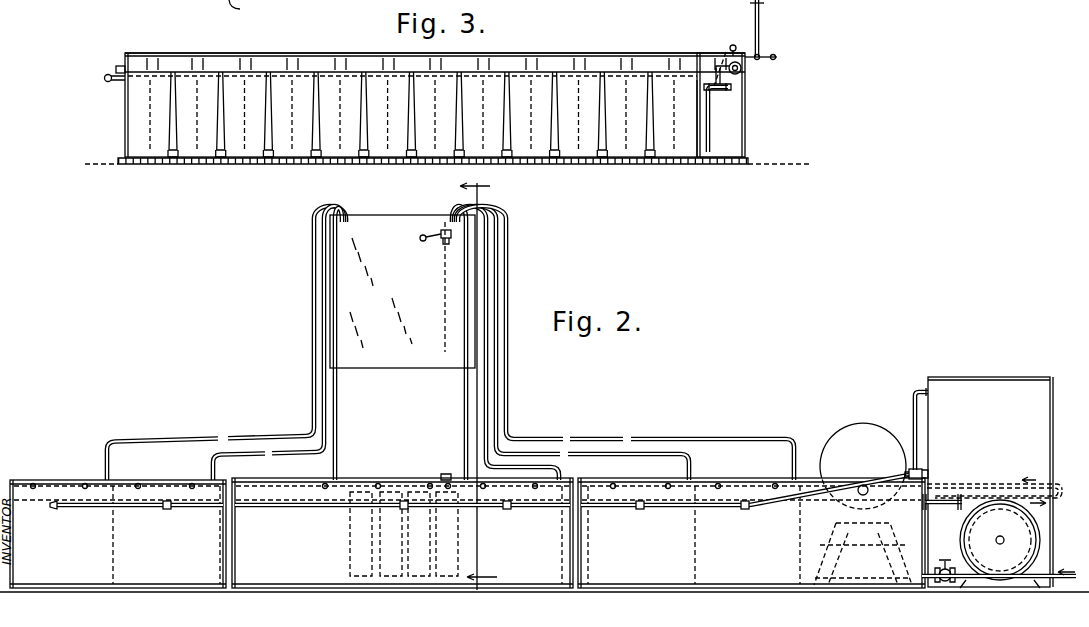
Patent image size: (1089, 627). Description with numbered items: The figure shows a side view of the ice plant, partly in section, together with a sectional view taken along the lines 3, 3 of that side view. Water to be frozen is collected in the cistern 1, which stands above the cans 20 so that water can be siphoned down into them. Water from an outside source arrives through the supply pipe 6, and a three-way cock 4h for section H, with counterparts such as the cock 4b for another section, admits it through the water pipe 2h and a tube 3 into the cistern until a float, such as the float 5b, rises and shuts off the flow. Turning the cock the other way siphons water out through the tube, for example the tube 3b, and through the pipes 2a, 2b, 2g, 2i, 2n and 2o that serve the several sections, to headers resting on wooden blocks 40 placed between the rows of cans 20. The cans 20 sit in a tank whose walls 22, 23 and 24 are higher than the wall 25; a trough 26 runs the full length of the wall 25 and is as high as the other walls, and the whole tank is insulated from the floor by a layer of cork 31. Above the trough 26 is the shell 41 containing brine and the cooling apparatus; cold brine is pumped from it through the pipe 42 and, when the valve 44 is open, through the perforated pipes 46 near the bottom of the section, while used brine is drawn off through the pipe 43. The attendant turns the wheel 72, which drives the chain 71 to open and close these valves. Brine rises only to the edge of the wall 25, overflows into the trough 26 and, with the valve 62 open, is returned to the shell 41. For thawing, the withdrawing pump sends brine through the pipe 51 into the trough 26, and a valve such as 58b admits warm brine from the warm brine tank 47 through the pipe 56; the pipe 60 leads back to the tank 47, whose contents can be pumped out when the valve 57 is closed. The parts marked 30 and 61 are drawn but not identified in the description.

In FIG. 2, the cistern 1 is at (395, 220).
In FIG. 2, the water pipe 2a is at (253, 437).
In FIG. 2, the water pipe 2b is at (255, 457).
In FIG. 2, the water pipe 2g is at (339, 444).
In FIG. 2, the water pipe 2h is at (465, 437).
In FIG. 2, the water pipe 2i is at (482, 402).
In FIG. 2, the water pipe 2n is at (494, 384).
In FIG. 2, the water pipe 2o is at (506, 413).
In FIG. 2, the tube 3 is at (478, 379).
In FIG. 2, the tube 3b is at (443, 297).
In FIG. 3, the three-way cock 4b is at (760, 47).
In FIG. 2, the three-way cock 4h is at (442, 476).
In FIG. 2, the float 5b is at (420, 240).
In FIG. 3, the water supply pipe 6 is at (768, 57).
In FIG. 2, the water supply pipe 6 is at (1062, 487).
In FIG. 3, the can 20 is at (412, 116).
In FIG. 2, the can 20 is at (404, 534).
In FIG. 2, the tank wall 22 is at (13, 542).
In FIG. 3, the tank wall 23 is at (125, 109).
In FIG. 2, the tank wall 24 is at (800, 531).
In FIG. 3, the lower tank wall 25 is at (697, 118).
In FIG. 3, the trough 26 is at (748, 142).
In FIG. 3, the frame 30 is at (245, 9).
In FIG. 3, the cork layer 31 is at (715, 164).
In FIG. 2, the cork layer 31 is at (82, 586).
In FIG. 3, the wooden block 40 is at (136, 58).
In FIG. 2, the cooling shell 41 is at (858, 452).
In FIG. 3, the brine discharge pipe 42 is at (742, 69).
In FIG. 3, the brine withdrawing pipe 43 is at (732, 88).
In FIG. 3, the valve 44 is at (722, 88).
In FIG. 3, the perforated brine pipe 46 is at (711, 127).
In FIG. 2, the warm brine tank 47 is at (990, 378).
In FIG. 2, the pipe 51 is at (913, 400).
In FIG. 3, the warm brine pipe 56 is at (104, 78).
In FIG. 2, the warm brine pipe 56 is at (663, 508).
In FIG. 2, the valve 57 is at (925, 470).
In FIG. 3, the valve 58b is at (119, 66).
In FIG. 2, the pipe 60 is at (945, 498).
In FIG. 2, the pump 61 is at (970, 568).
In FIG. 2, the valve 62 is at (945, 559).
In FIG. 3, the chain 71 is at (728, 58).
In FIG. 3, the wheel 72 is at (737, 42).